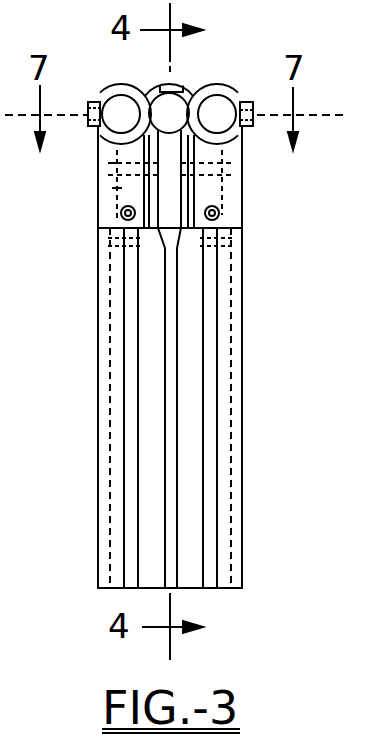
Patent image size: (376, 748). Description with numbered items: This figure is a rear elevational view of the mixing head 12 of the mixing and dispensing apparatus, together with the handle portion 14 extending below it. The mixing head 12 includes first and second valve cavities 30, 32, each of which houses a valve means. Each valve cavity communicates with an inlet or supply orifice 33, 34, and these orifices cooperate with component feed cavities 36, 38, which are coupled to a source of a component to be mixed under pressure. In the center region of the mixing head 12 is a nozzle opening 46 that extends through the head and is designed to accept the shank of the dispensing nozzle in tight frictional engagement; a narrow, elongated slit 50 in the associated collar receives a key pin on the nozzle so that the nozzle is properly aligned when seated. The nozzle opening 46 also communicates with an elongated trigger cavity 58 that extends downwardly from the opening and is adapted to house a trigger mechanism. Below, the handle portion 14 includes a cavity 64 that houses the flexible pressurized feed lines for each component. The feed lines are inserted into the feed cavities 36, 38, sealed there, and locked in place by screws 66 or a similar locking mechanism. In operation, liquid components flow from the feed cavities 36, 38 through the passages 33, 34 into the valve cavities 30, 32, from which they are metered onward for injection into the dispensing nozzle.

The mixing head 12 is at (241, 88).
The handle portion 14 is at (98, 408).
The first valve cavity 30 is at (242, 133).
The second valve cavity 32 is at (98, 133).
The inlet or supply orifice 33 is at (233, 172).
The inlet or supply orifice 34 is at (117, 162).
The component feed cavity 36 is at (222, 197).
The component feed cavity 38 is at (117, 188).
The nozzle opening 46 is at (181, 104).
The slit 50 is at (162, 80).
The trigger cavity 58 is at (166, 216).
The cavity 64 is at (160, 320).
The screws 66 is at (121, 212).